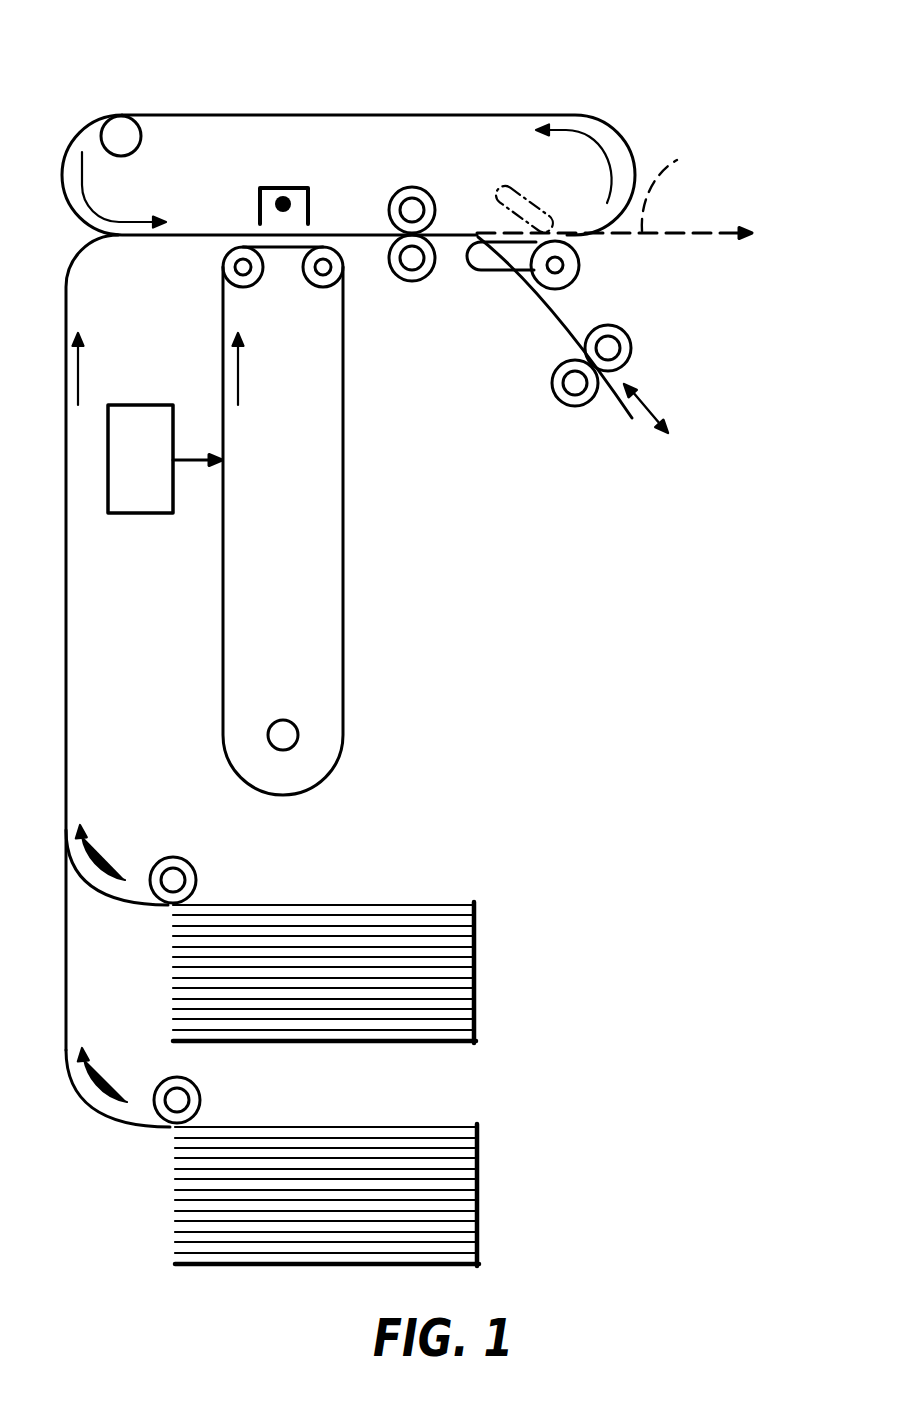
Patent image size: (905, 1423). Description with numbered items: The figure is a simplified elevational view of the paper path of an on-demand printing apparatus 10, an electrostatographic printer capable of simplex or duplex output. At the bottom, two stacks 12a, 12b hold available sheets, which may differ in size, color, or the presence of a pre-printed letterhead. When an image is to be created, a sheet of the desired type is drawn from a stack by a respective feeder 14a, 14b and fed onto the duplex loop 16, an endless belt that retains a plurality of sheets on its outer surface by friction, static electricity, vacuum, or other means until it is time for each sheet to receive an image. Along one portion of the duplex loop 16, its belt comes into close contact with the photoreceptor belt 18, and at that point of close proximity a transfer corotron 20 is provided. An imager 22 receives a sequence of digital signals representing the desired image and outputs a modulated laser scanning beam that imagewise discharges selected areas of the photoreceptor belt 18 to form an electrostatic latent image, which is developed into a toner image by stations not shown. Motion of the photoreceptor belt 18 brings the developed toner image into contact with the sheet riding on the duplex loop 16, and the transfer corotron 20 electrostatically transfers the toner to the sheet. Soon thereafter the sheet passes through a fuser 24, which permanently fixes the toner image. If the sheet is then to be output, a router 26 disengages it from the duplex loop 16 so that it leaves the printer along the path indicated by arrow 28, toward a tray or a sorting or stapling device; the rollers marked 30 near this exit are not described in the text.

The printing apparatus 10 is at (172, 68).
The stack of sheets 12a is at (360, 903).
The stack of sheets 12b is at (410, 1125).
The feeder 14a is at (183, 867).
The feeder 14b is at (193, 1088).
The duplex loop 16 is at (453, 115).
The photoreceptor belt 18 is at (345, 502).
The transfer corotron 20 is at (287, 188).
The imager 22 is at (143, 405).
The fuser 24 is at (418, 281).
The router 26 is at (563, 265).
The output path arrow 28 is at (614, 189).
The exit roller pair 30 is at (646, 345).